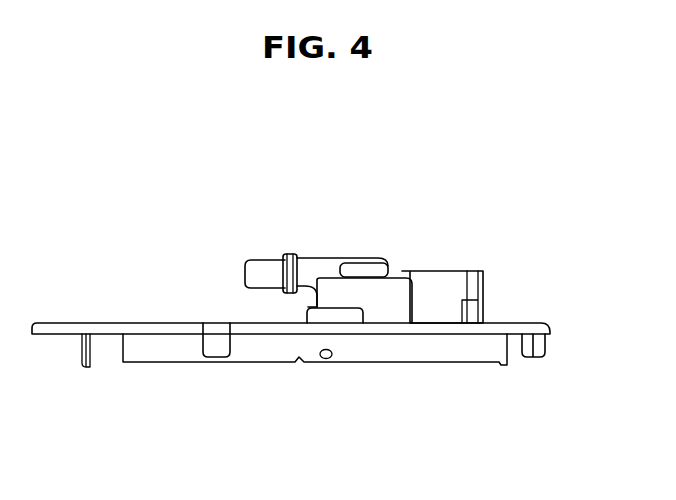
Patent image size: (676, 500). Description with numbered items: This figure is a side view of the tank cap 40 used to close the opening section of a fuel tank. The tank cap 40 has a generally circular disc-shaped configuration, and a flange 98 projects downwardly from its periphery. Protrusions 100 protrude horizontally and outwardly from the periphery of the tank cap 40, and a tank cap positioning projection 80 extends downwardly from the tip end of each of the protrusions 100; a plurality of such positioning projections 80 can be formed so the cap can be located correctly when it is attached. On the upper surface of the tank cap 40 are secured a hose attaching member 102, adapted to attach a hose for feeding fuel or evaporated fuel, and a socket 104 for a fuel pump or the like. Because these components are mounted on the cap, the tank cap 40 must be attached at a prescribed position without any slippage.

The tank cap 40 is at (188, 276).
The tank cap positioning projection 80 is at (214, 350).
The flange 98 is at (423, 352).
The protrusion 100 is at (538, 321).
The hose attaching member 102 is at (312, 270).
The socket 104 is at (438, 275).